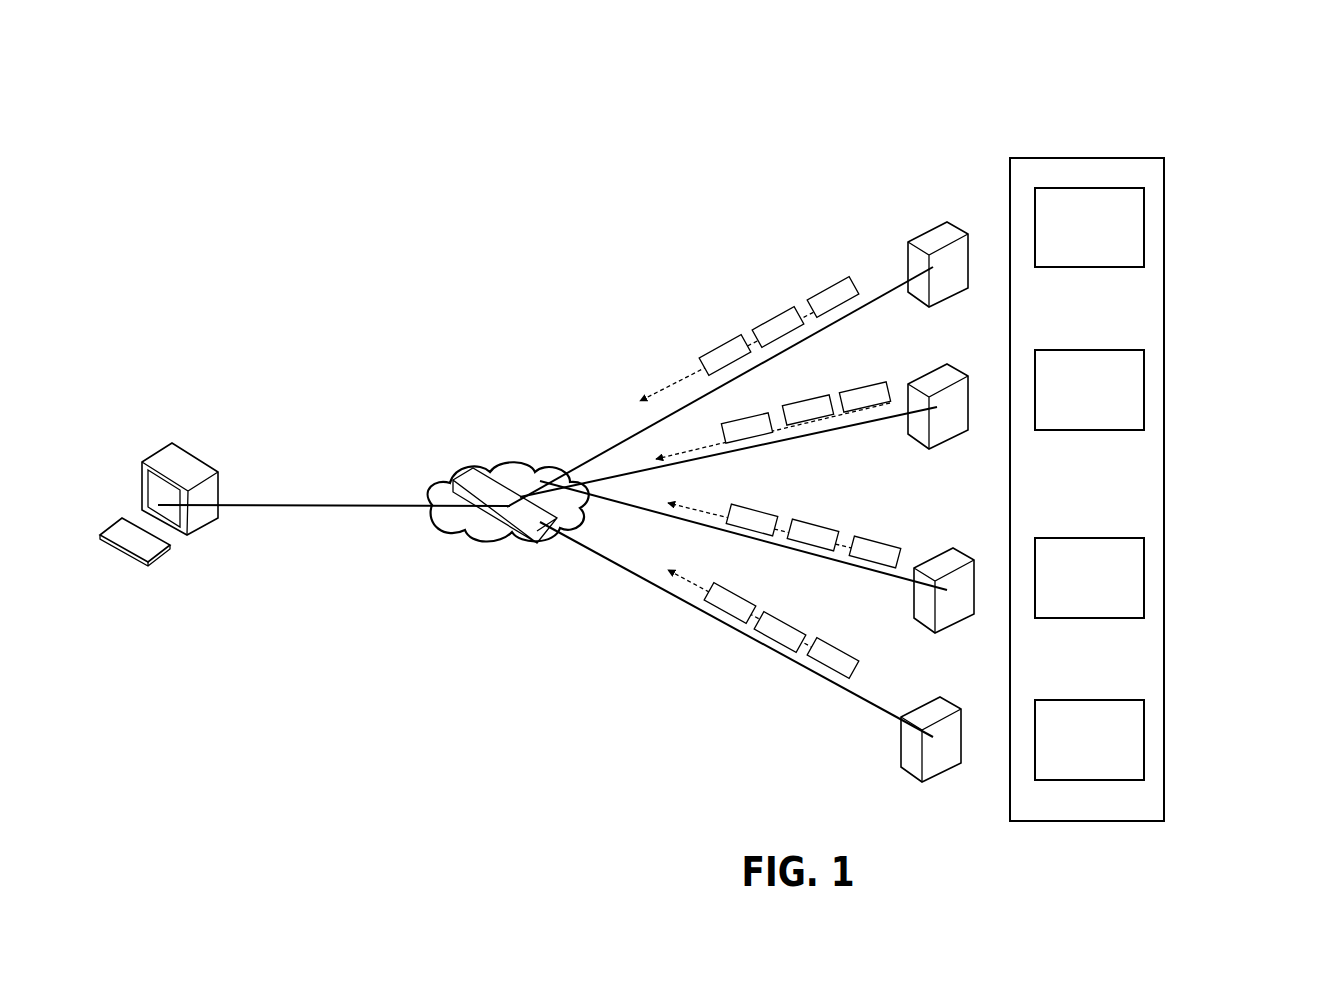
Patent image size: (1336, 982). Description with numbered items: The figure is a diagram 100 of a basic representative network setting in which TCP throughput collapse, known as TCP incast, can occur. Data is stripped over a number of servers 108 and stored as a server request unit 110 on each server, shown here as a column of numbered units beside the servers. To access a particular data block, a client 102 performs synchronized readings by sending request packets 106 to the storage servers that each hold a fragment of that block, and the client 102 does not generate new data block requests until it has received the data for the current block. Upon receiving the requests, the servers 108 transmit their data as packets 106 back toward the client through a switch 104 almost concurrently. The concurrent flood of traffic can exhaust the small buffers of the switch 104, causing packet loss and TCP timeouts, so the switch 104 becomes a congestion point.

The diagram 100 is at (1181, 97).
The client 102 is at (177, 429).
The switch 104 is at (470, 458).
The packets 106 is at (697, 326).
The servers 108 is at (888, 224).
The server request unit 110 is at (1171, 180).